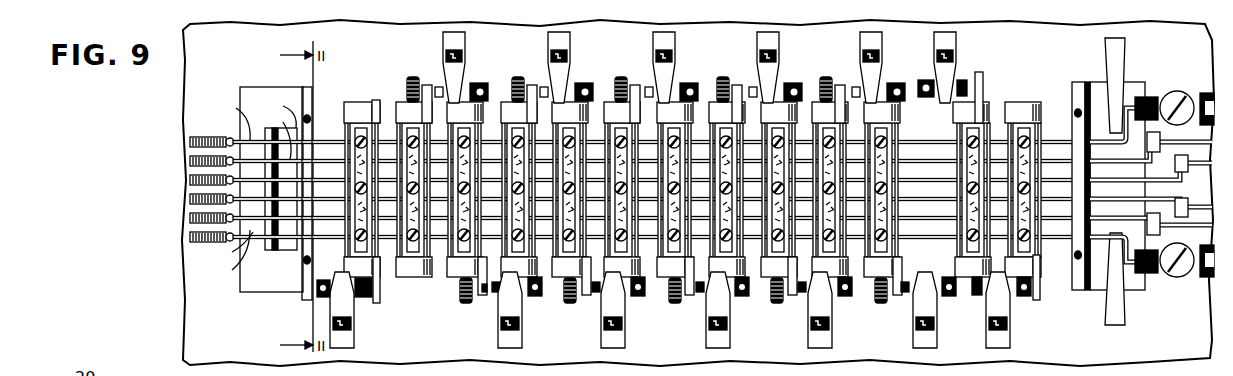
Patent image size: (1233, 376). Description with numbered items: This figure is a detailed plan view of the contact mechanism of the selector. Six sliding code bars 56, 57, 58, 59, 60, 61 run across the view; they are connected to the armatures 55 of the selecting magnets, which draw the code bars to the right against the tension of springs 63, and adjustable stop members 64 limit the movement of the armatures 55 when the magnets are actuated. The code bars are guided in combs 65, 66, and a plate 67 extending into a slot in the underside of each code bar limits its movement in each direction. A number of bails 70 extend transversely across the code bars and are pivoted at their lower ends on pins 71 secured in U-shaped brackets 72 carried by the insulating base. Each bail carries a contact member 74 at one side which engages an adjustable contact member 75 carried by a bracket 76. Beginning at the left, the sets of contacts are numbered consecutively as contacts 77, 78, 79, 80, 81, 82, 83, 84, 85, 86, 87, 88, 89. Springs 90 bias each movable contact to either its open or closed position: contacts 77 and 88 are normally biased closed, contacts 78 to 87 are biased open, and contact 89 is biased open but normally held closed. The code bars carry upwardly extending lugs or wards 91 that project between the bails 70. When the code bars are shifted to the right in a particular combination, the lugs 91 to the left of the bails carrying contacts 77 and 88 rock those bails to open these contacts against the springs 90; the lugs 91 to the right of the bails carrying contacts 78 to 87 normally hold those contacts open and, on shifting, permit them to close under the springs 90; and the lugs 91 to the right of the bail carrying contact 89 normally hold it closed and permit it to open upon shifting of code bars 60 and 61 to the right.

The armature 55 is at (1112, 62).
The code bar 56 is at (231, 256).
The code bar 57 is at (233, 249).
The code bar 58 is at (290, 243).
The code bar 59 is at (278, 134).
The code bar 60 is at (280, 112).
The code bar 61 is at (235, 118).
The spring 63 is at (205, 139).
The adjustable stop member 64 is at (1180, 277).
The comb 65 is at (303, 290).
The comb 66 is at (1078, 289).
The plate 67 is at (276, 209).
The bail 70 is at (400, 108).
The pin 71 is at (356, 306).
The U-shaped bracket 72 is at (445, 276).
The contact member 74 is at (481, 298).
The adjustable contact member 75 is at (495, 294).
The bracket 76 is at (521, 305).
The contact 77 is at (377, 298).
The contact 78 is at (441, 88).
The contact 79 is at (486, 296).
The contact 80 is at (547, 88).
The contact 81 is at (594, 294).
The contact 82 is at (650, 88).
The contact 83 is at (700, 294).
The contact 84 is at (753, 88).
The contact 85 is at (802, 294).
The contact 86 is at (857, 88).
The contact 87 is at (905, 294).
The contact 88 is at (979, 82).
The contact 89 is at (1037, 291).
The spring 90 is at (410, 82).
The lug 91 is at (340, 160).